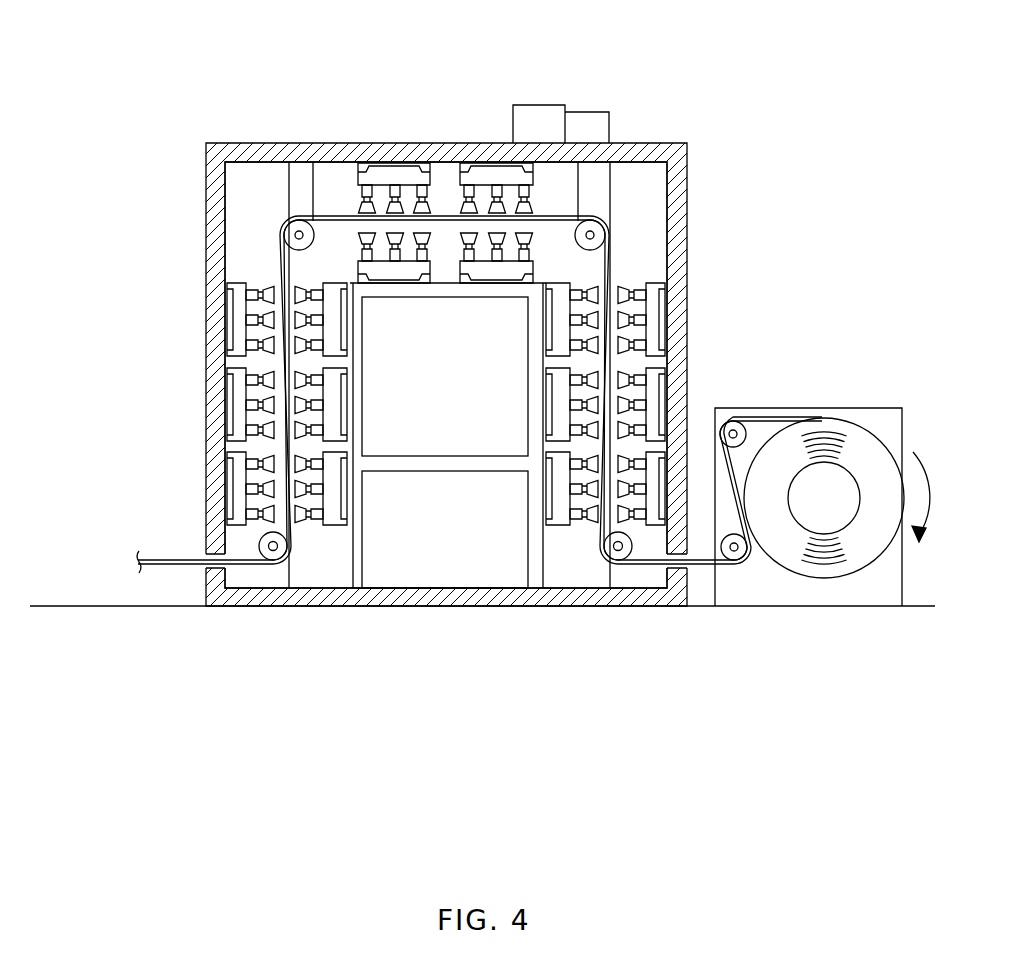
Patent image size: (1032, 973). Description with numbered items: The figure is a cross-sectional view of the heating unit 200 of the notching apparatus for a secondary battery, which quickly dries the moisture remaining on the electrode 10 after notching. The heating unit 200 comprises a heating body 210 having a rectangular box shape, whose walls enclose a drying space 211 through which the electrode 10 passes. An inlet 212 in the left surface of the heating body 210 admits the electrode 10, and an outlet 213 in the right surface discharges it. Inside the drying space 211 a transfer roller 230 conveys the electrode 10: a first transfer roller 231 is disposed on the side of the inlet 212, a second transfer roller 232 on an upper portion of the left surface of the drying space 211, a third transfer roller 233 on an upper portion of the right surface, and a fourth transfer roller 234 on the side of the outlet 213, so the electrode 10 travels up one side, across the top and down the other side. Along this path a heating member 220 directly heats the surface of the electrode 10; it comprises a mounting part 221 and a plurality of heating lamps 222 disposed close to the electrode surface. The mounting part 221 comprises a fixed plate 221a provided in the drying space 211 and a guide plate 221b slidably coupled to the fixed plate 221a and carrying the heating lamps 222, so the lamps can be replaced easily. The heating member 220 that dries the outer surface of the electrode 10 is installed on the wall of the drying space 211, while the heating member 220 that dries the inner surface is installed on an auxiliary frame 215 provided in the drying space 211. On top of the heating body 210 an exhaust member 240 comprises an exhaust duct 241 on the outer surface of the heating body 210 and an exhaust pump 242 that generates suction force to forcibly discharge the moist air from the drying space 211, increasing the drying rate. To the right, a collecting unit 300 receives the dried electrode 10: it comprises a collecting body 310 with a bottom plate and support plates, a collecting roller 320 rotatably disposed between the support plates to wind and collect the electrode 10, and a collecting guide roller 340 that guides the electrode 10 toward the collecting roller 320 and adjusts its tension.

The electrode 10 is at (162, 564).
The heating unit 200 is at (852, 718).
The heating body 210 is at (677, 193).
The drying space 211 is at (641, 243).
The inlet 212 is at (207, 566).
The outlet 213 is at (683, 566).
The auxiliary frame 215 is at (545, 565).
The heating member 220 is at (66, 202).
The mounting part 221 is at (117, 242).
The fixed plate 221a is at (227, 288).
The guide plate 221b is at (233, 325).
The heating lamps 222 is at (265, 282).
The transfer roller 230 is at (727, 718).
The first transfer roller 231 is at (273, 562).
The second transfer roller 232 is at (299, 233).
The third transfer roller 233 is at (592, 235).
The fourth transfer roller 234 is at (618, 562).
The exhaust member 240 is at (597, 40).
The exhaust duct 241 is at (535, 113).
The exhaust pump 242 is at (597, 118).
The collecting unit 300 is at (920, 664).
The collecting body 310 is at (892, 594).
The collecting roller 320 is at (832, 513).
The collecting guide roller 340 is at (738, 447).